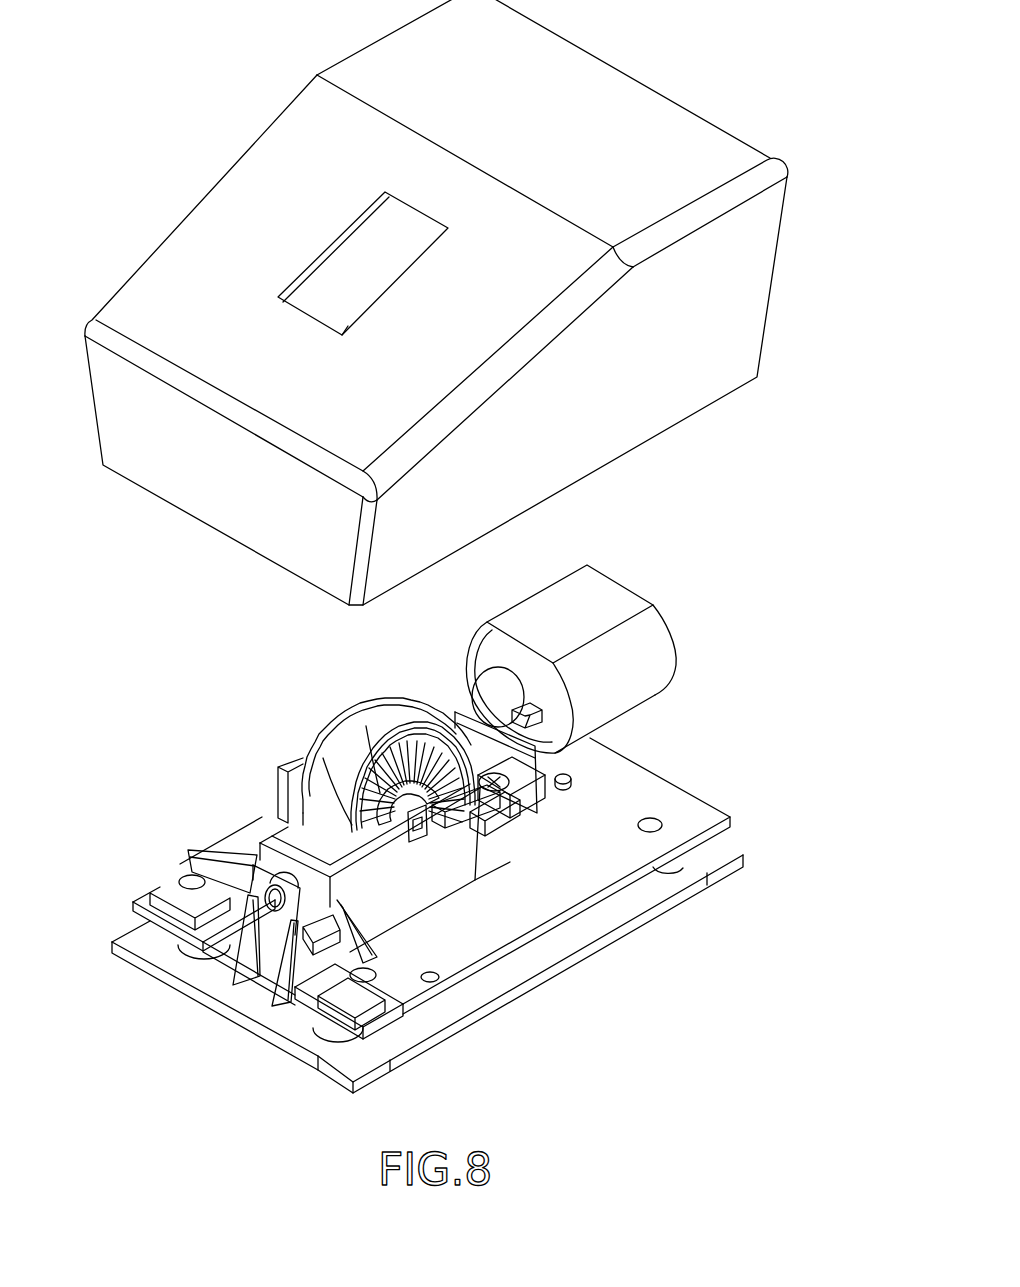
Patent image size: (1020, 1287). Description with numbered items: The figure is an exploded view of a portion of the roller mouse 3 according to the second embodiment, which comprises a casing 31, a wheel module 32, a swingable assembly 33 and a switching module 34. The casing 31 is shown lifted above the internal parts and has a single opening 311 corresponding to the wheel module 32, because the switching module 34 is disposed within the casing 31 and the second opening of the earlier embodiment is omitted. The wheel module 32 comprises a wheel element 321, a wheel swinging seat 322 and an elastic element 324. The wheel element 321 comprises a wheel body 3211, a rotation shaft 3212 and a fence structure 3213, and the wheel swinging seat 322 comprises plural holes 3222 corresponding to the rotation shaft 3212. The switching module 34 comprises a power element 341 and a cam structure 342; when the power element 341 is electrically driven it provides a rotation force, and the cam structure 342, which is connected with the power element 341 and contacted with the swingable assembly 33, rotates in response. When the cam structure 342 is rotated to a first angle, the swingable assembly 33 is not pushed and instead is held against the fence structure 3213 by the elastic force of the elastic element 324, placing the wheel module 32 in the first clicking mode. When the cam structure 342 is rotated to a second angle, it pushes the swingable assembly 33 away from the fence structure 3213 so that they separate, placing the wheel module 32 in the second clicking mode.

The roller mouse 3 is at (198, 40).
The casing 31 is at (183, 205).
The opening 311 is at (342, 259).
The wheel module 32 is at (260, 810).
The wheel element 321 is at (390, 674).
The wheel body 3211 is at (370, 723).
The rotation shaft 3212 is at (382, 753).
The fence structure 3213 is at (353, 793).
The wheel swinging seat 322 is at (412, 883).
The holes 3222 is at (462, 825).
The elastic element 324 is at (490, 825).
The swingable assembly 33 is at (527, 818).
The switching module 34 is at (648, 575).
The power element 341 is at (548, 608).
The cam structure 342 is at (500, 685).